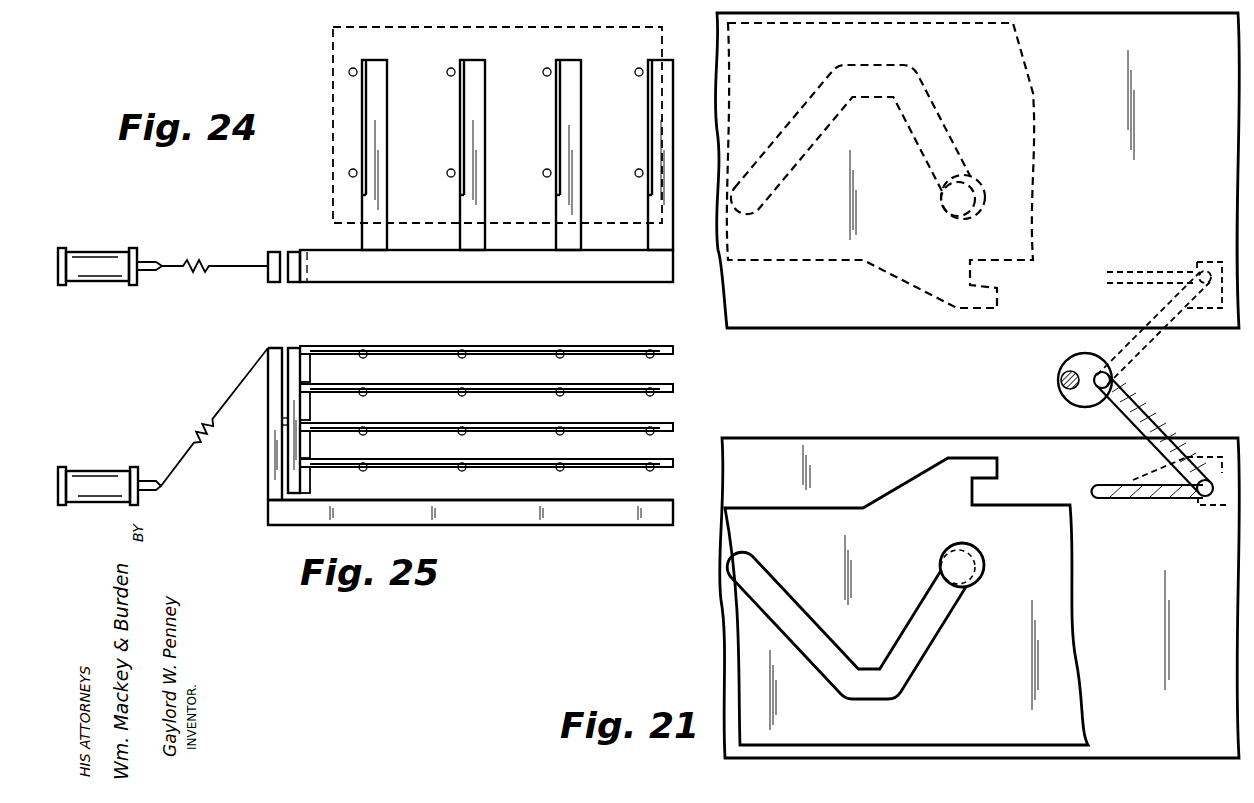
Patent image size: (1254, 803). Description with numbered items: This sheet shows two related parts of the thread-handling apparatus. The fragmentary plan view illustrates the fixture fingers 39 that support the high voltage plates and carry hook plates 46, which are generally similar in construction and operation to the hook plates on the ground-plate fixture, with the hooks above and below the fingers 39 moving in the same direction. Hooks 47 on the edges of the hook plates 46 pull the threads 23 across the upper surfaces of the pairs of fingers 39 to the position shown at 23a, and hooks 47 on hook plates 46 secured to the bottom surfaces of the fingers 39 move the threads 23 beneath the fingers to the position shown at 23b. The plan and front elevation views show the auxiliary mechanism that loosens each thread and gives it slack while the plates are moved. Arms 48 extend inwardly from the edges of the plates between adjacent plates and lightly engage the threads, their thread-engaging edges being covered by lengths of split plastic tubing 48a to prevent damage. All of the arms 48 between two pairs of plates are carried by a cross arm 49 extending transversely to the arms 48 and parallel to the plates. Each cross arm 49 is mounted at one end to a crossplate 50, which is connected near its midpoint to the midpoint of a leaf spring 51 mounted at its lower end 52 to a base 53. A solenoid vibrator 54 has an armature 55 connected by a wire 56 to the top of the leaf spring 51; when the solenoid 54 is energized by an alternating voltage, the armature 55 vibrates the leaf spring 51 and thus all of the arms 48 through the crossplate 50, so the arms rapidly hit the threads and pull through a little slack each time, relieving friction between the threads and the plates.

In FIG. 21, the thread 23 is at (1058, 382).
In FIG. 21, the thread position above fingers 23a is at (1145, 410).
In FIG. 21, the thread position beneath fingers 23b is at (1150, 352).
In FIG. 21, the fingers 39 is at (853, 328).
In FIG. 21, the hook plate 46 is at (810, 260).
In FIG. 21, the hook 47 is at (992, 318).
In FIG. 24, the arm 48 is at (381, 104).
In FIG. 25, the arm 48 is at (589, 346).
In FIG. 24, the split plastic tubing 48a is at (352, 68).
In FIG. 25, the split plastic tubing 48a is at (364, 348).
In FIG. 24, the cross arm 49 is at (673, 278).
In FIG. 25, the cross arm 49 is at (674, 352).
In FIG. 24, the crossplate 50 is at (296, 256).
In FIG. 25, the crossplate 50 is at (295, 348).
In FIG. 24, the leaf spring 51 is at (272, 282).
In FIG. 25, the leaf spring 51 is at (273, 348).
In FIG. 25, the lower end of leaf spring 52 is at (268, 509).
In FIG. 25, the base 53 is at (540, 525).
In FIG. 24, the solenoid vibrator 54 is at (100, 250).
In FIG. 25, the solenoid vibrator 54 is at (100, 468).
In FIG. 24, the armature 55 is at (141, 262).
In FIG. 25, the armature 55 is at (141, 481).
In FIG. 24, the wire 56 is at (236, 266).
In FIG. 25, the wire 56 is at (236, 389).